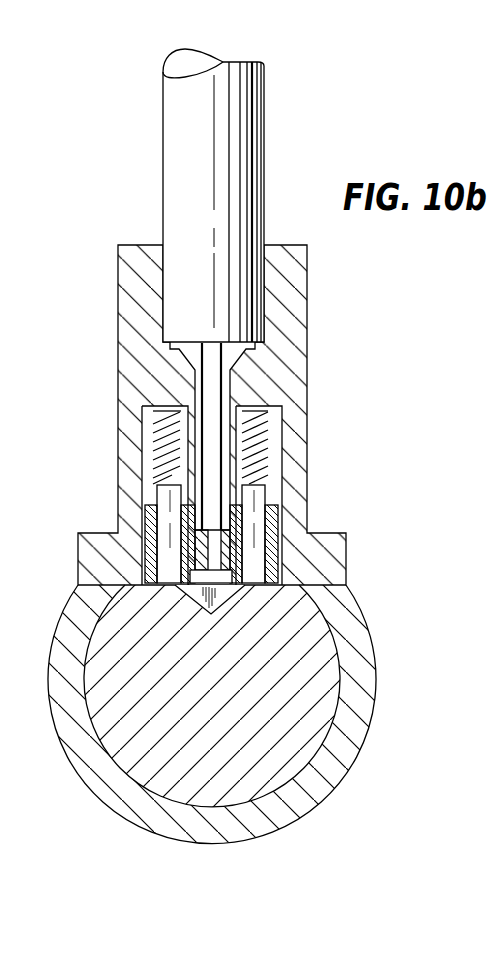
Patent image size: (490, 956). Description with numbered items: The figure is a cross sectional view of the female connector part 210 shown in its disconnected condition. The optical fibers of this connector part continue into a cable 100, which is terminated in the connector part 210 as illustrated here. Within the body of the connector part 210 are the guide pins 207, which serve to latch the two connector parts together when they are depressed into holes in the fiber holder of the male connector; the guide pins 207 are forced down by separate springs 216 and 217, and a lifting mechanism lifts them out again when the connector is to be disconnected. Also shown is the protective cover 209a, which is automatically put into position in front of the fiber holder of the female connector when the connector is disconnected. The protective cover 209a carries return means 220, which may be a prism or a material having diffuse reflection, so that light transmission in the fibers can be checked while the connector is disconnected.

The cable 100 is at (243, 155).
The connector part 210 is at (300, 313).
The spring 216 is at (257, 442).
The spring 217 is at (170, 427).
The guide pins 207 is at (273, 510).
The return means 220 is at (238, 594).
The protective cover 209a is at (277, 763).